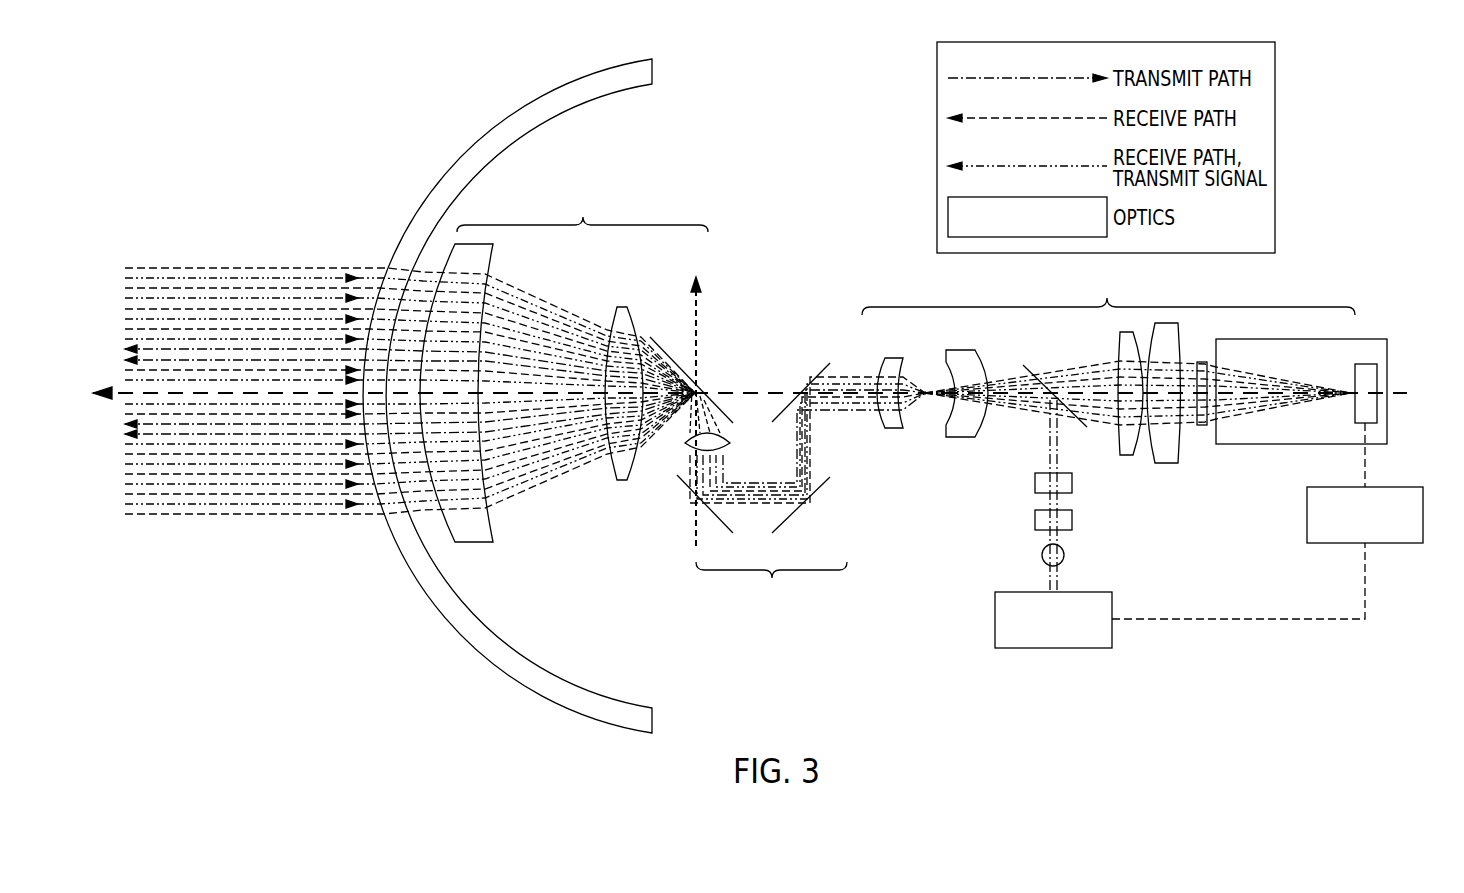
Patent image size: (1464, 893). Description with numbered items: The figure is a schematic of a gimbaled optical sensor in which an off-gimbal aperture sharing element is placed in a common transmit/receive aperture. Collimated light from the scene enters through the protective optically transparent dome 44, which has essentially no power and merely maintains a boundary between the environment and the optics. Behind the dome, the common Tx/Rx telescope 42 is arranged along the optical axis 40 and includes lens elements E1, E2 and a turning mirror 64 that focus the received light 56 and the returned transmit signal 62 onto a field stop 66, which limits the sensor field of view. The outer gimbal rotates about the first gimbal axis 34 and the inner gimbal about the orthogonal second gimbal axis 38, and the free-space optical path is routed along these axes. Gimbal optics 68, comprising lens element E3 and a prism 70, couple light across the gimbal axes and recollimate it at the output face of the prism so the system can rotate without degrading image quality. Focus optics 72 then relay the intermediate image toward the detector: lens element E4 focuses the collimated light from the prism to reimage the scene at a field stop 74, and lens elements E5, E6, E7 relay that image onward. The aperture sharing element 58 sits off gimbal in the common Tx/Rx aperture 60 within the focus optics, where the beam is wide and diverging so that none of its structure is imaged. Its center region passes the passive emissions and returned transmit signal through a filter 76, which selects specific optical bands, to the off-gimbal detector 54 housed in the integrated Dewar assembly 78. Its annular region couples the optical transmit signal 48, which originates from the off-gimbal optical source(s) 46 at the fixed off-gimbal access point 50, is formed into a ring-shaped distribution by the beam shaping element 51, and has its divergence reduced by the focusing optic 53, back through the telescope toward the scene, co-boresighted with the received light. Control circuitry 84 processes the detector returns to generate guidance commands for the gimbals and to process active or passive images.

The first gimbal axis 34 is at (696, 515).
The second gimbal axis 38 is at (1402, 388).
The optical axis 40 is at (120, 392).
The common Tx/Rx telescope 42 is at (564, 382).
The protective optically transparent dome 44 is at (533, 96).
The off-gimbal optical source(s) 46 is at (1067, 592).
The optical transmit signal 48 is at (160, 358).
The off-gimbal access point 50 is at (1042, 555).
The beam shaping element 51 is at (1035, 519).
The focusing optic 53 is at (1035, 481).
The off-gimbal detector 54 is at (1367, 365).
The received light 56 is at (202, 268).
The aperture sharing element 58 is at (1035, 372).
The common Tx/Rx aperture 60 is at (1033, 412).
The returned transmit signal 62 is at (178, 510).
The turning mirror 64 is at (660, 350).
The field stop 66 is at (687, 427).
The gimbal optics 68 is at (801, 485).
The prism 70 is at (823, 485).
The focus optics 72 is at (1108, 382).
The field stop 74 is at (922, 404).
The filter 76 is at (1200, 430).
The integrated Dewar assembly 78 is at (1300, 445).
The control circuitry 84 is at (1380, 543).
The lens element E1 is at (456, 408).
The lens element E2 is at (618, 402).
The lens element E3 is at (719, 440).
The lens element E4 is at (892, 408).
The lens element E5 is at (967, 406).
The lens element E6 is at (1129, 407).
The lens element E7 is at (1164, 406).